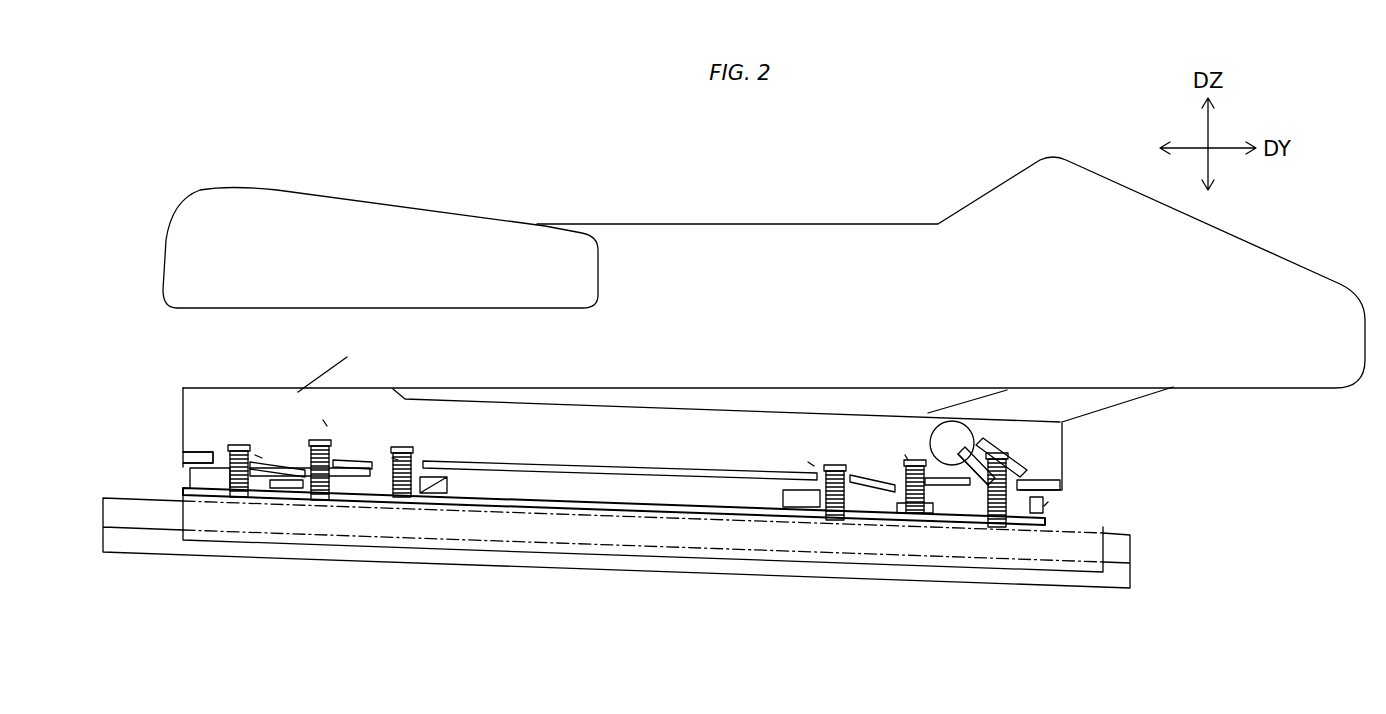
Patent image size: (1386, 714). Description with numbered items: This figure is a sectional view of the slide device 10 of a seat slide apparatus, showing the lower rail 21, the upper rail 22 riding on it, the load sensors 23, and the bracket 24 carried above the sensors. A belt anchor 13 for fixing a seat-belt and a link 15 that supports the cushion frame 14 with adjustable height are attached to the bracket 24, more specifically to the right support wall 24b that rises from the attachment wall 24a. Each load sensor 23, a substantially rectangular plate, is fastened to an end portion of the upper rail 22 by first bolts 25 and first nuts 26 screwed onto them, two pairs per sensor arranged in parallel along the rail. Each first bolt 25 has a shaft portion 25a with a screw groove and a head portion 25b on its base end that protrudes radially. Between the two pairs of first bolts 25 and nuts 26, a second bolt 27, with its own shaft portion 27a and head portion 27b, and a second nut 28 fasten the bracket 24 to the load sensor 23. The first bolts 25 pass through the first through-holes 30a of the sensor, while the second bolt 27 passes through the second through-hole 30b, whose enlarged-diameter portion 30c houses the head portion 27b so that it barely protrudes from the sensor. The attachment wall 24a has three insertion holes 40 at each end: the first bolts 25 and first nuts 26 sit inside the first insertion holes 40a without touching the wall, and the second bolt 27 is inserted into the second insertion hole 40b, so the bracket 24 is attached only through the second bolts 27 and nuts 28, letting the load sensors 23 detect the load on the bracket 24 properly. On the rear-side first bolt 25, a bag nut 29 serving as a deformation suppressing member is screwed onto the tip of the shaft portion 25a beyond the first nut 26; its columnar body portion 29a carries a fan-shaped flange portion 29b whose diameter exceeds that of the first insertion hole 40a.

The slide device 10 is at (1193, 464).
The belt anchor 13 is at (932, 420).
The cushion frame 14 is at (748, 236).
The link 15 is at (334, 380).
The lower rail 21 is at (650, 578).
The upper rail 22 is at (590, 552).
The load sensor 23 is at (462, 478).
The bracket 24 is at (607, 463).
The attachment wall 24a is at (550, 463).
The support wall 24b is at (687, 433).
The first bolt 25 is at (235, 500).
The shaft portion 25a is at (182, 459).
The head portion 25b is at (222, 497).
The first nut 26 is at (235, 450).
The second bolt 27 is at (315, 488).
The shaft portion 27a is at (298, 480).
The head portion 27b is at (330, 488).
The second nut 28 is at (333, 455).
The bag nut 29 is at (1000, 440).
The body portion 29a is at (983, 445).
The flange portion 29b is at (1030, 448).
The first through-hole 30a is at (252, 495).
The second through-hole 30b is at (325, 500).
The enlarged-diameter portion 30c is at (332, 500).
The insertion hole 40 is at (258, 456).
The first insertion hole 40a is at (255, 455).
The second insertion hole 40b is at (323, 420).